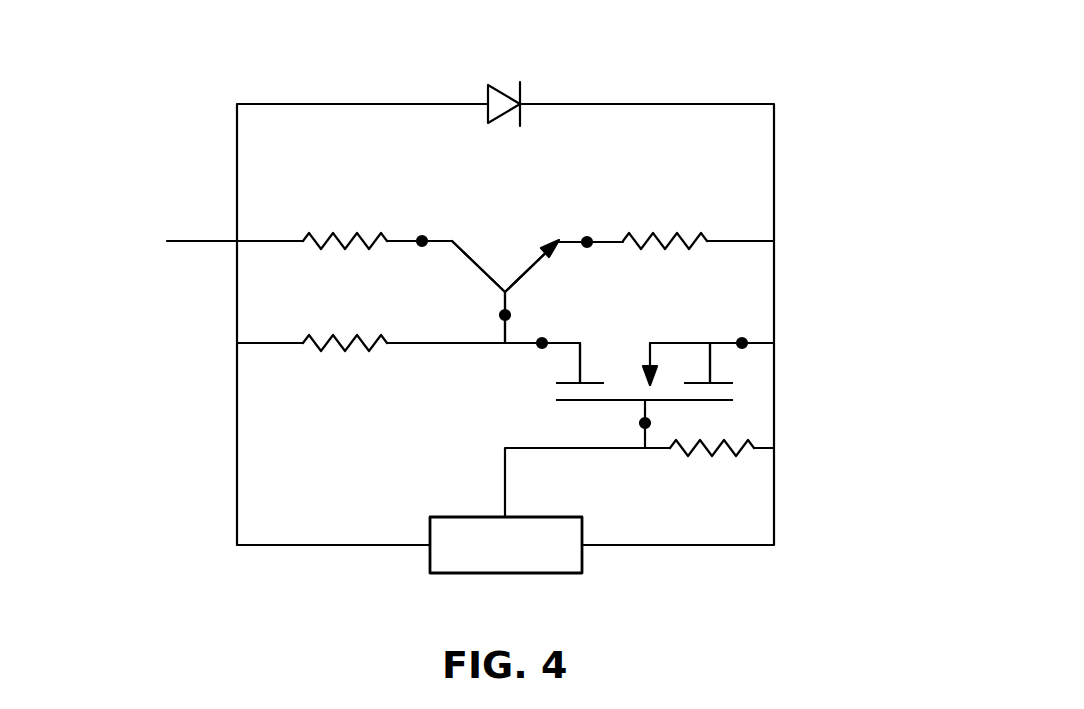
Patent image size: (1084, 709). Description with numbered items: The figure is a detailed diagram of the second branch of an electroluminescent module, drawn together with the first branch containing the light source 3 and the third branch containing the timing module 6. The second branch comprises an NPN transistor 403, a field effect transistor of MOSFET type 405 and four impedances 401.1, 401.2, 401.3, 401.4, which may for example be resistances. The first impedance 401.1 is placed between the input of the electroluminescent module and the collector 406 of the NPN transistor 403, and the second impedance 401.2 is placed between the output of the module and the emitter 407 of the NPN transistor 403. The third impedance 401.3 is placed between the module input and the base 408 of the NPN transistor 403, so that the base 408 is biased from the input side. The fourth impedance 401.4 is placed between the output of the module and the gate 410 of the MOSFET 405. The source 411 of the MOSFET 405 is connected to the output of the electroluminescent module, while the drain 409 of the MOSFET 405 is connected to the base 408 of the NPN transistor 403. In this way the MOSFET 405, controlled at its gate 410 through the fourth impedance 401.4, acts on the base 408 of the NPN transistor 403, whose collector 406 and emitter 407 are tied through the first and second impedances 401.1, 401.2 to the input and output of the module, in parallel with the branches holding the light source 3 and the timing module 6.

The light source 3 is at (505, 85).
The timing module 6 is at (447, 573).
The first impedance 401.1 is at (315, 233).
The second impedance 401.2 is at (693, 232).
The third impedance 401.3 is at (327, 353).
The fourth impedance 401.4 is at (732, 455).
The NPN transistor 403 is at (512, 263).
The field effect transistor of MOSFET type 405 is at (683, 343).
The collector 406 is at (422, 241).
The emitter 407 is at (587, 242).
The base 408 is at (505, 315).
The drain 409 is at (542, 344).
The gate 410 is at (645, 423).
The source 411 is at (742, 343).